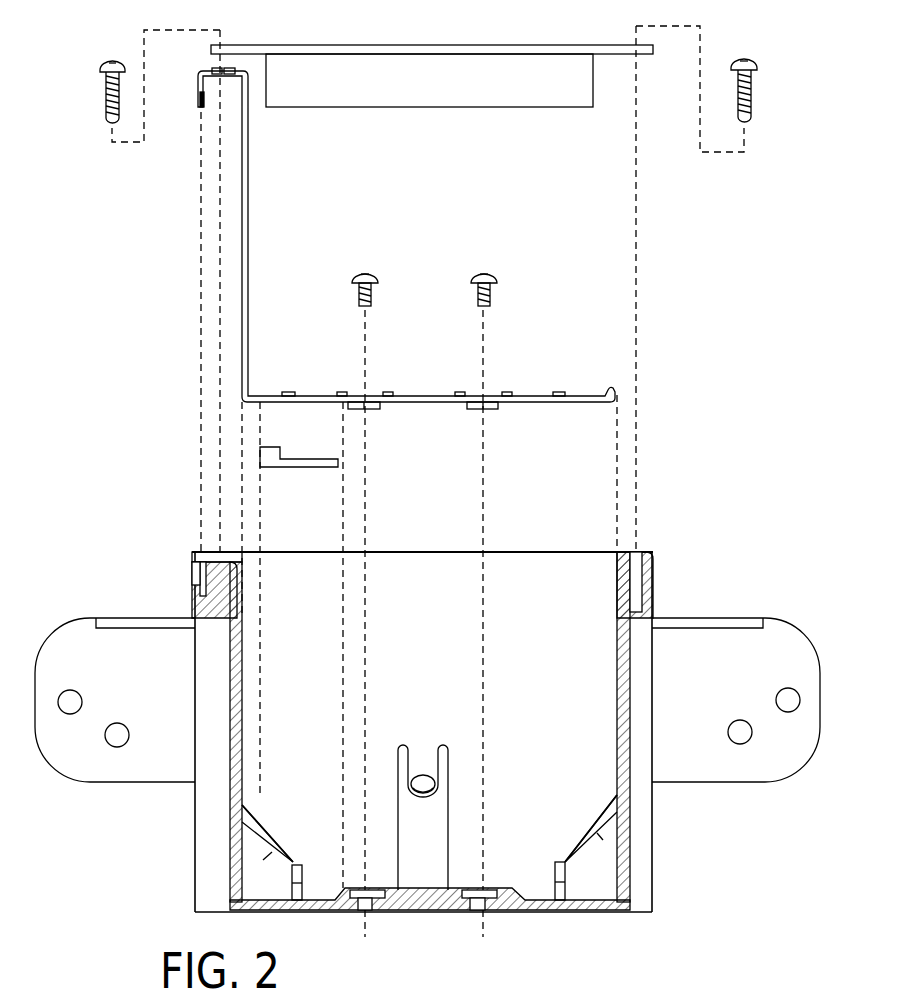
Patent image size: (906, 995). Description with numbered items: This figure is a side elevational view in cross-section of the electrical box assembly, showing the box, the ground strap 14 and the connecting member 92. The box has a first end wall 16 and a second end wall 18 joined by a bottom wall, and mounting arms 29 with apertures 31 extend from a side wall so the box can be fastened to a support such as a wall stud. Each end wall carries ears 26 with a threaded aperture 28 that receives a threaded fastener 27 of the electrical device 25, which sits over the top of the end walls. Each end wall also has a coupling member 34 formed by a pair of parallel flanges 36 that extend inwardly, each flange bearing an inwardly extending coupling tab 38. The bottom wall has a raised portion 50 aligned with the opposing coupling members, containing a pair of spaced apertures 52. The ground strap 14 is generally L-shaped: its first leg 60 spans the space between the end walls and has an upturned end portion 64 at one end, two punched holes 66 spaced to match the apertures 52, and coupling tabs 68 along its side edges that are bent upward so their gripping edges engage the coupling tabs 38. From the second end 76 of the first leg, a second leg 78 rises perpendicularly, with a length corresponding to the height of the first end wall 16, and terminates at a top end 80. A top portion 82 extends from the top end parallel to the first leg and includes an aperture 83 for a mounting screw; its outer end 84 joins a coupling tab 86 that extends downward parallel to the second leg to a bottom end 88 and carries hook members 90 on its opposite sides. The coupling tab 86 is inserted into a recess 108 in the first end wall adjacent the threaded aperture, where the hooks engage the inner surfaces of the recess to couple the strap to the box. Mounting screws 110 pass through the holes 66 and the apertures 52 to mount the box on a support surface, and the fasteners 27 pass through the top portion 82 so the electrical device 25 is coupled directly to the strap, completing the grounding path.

The ground strap 14 is at (252, 260).
The first end wall 16 is at (248, 672).
The second end wall 18 is at (615, 633).
The electrical device 25 is at (475, 45).
The ears 26 is at (400, 545).
The threaded fastener 27 is at (100, 95).
The threaded aperture 28 is at (637, 552).
The mounting arms 29 is at (427, 687).
The apertures 31 is at (68, 715).
The coupling member 34 is at (429, 784).
The flanges 36 is at (263, 860).
The coupling tab 38 is at (302, 875).
The raised portion 50 is at (465, 880).
The apertures 52 is at (485, 913).
The first leg 60 is at (416, 396).
The upturned end portion 64 is at (615, 393).
The holes 66 is at (484, 396).
The coupling tabs 68 is at (291, 394).
The second end 76 is at (253, 392).
The second leg 78 is at (248, 213).
The top end 80 is at (249, 58).
The top portion 82 is at (200, 70).
The aperture 83 is at (227, 70).
The outer end 84 is at (197, 78).
The coupling tab 86 is at (198, 90).
The bottom end 88 is at (200, 110).
The hook members 90 is at (205, 97).
The connecting member 92 is at (338, 462).
The recess 108 is at (202, 572).
The mounting screws 110 is at (364, 273).